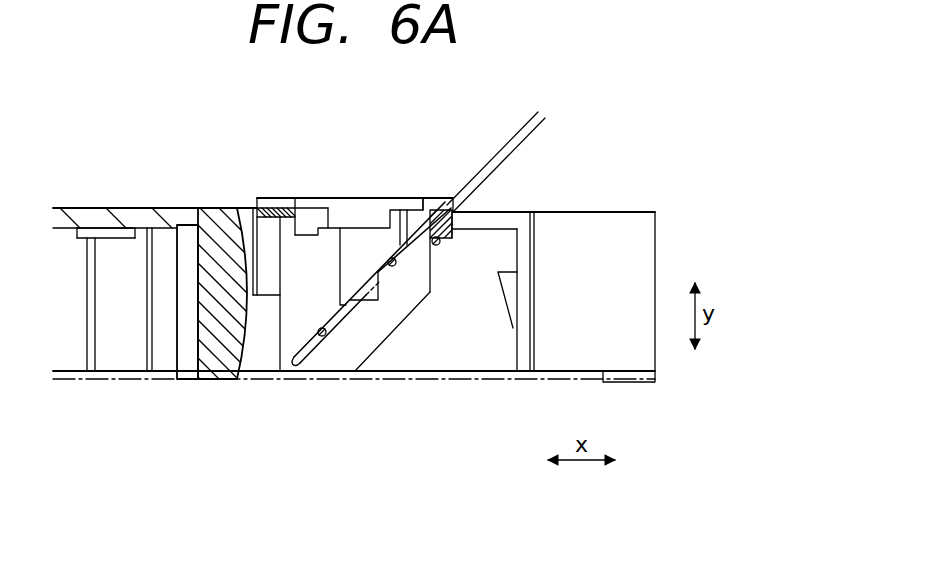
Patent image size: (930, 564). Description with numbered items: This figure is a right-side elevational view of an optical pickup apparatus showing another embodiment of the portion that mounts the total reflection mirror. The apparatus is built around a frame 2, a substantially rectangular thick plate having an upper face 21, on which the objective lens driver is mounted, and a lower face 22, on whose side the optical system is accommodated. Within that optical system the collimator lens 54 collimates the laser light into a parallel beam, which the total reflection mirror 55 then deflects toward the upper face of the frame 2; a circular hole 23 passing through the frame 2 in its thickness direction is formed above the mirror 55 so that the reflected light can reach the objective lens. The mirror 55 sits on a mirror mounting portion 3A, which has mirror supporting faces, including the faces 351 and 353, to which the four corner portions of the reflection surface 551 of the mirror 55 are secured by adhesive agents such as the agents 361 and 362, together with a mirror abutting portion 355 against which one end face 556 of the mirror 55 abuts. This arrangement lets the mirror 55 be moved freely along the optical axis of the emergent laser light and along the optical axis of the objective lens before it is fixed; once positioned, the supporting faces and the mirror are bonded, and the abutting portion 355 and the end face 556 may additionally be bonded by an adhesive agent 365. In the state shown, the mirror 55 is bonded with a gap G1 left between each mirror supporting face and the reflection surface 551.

The frame 2 is at (598, 238).
The mirror mounting portion 3A is at (460, 253).
The upper face 21 is at (244, 206).
The lower face 22 is at (266, 383).
The circular hole 23 is at (317, 206).
The collimator lens 54 is at (212, 332).
The total reflection mirror 55 is at (387, 317).
The mirror supporting face 351 is at (388, 257).
The mirror supporting face 353 is at (312, 342).
The mirror abutting portion 355 is at (498, 210).
The adhesive agent 361 is at (389, 257).
The adhesive agent 362 is at (327, 343).
The adhesive agent 365 is at (438, 246).
The reflection surface 551 is at (290, 370).
The end face 556 is at (462, 209).
The gap G1 is at (575, 152).